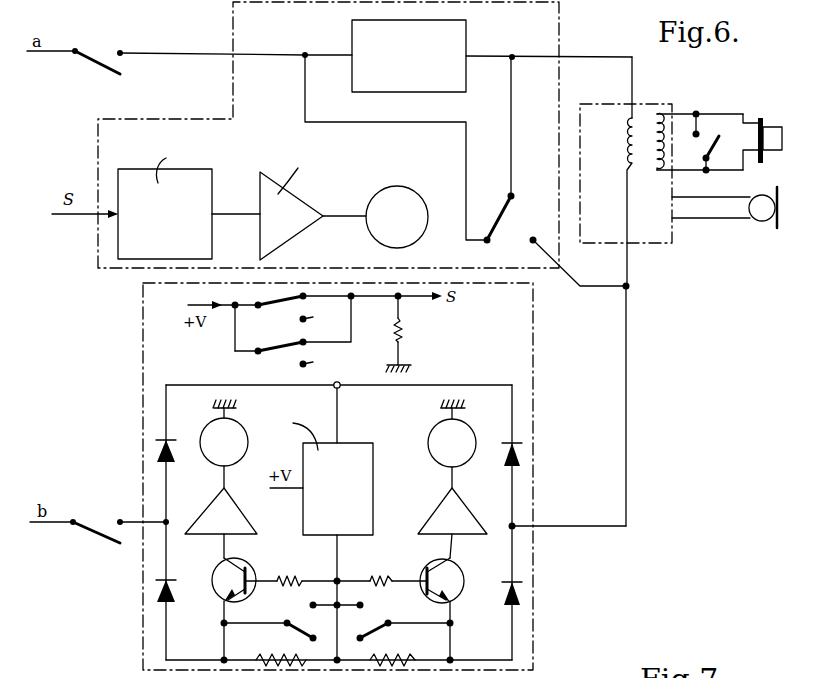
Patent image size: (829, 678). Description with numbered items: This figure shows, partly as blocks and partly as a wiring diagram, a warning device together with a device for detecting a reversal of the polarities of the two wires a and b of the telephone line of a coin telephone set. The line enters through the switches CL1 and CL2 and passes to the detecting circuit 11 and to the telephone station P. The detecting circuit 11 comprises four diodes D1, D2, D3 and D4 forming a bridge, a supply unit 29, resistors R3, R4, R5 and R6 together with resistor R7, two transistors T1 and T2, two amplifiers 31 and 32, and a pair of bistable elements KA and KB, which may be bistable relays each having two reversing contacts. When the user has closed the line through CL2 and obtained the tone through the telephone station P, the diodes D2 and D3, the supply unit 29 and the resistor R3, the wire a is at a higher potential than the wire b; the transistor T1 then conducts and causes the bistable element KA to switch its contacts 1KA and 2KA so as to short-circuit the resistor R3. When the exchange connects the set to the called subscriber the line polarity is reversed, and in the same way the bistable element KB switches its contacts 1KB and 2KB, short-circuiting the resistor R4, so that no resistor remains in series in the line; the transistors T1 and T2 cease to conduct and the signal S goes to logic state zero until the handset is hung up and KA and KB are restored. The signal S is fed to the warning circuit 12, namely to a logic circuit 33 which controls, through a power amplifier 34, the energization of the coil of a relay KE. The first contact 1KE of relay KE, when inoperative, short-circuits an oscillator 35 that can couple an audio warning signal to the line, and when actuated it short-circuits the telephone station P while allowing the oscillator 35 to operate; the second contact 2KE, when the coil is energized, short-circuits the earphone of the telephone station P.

The detecting circuit 11 is at (143, 341).
The warning circuit 12 is at (233, 84).
The supply unit 29 is at (357, 443).
The amplifier 31 is at (210, 516).
The amplifier 32 is at (461, 524).
The logic circuit 33 is at (166, 196).
The power amplifier 34 is at (291, 205).
The oscillator 35 is at (441, 73).
The relay KE is at (397, 217).
The first contact 1KE is at (515, 150).
The second contact 2KE is at (701, 133).
The bistable element KA is at (224, 433).
The bistable element KB is at (452, 433).
The contact 1KA is at (279, 621).
The contact 1KB is at (393, 621).
The contact 2KA is at (274, 313).
The contact 2KB is at (274, 361).
The resistor R3 is at (292, 657).
The resistor R4 is at (392, 651).
The resistor R5 is at (291, 570).
The resistor R6 is at (382, 569).
The resistor R7 is at (405, 334).
The diode D1 is at (157, 455).
The diode D2 is at (520, 455).
The diode D3 is at (157, 592).
The diode D4 is at (520, 596).
The transistor T1 is at (212, 576).
The transistor T2 is at (458, 575).
The line switch CL1 is at (75, 52).
The line switch CL2 is at (76, 520).
The telephone station P is at (660, 244).